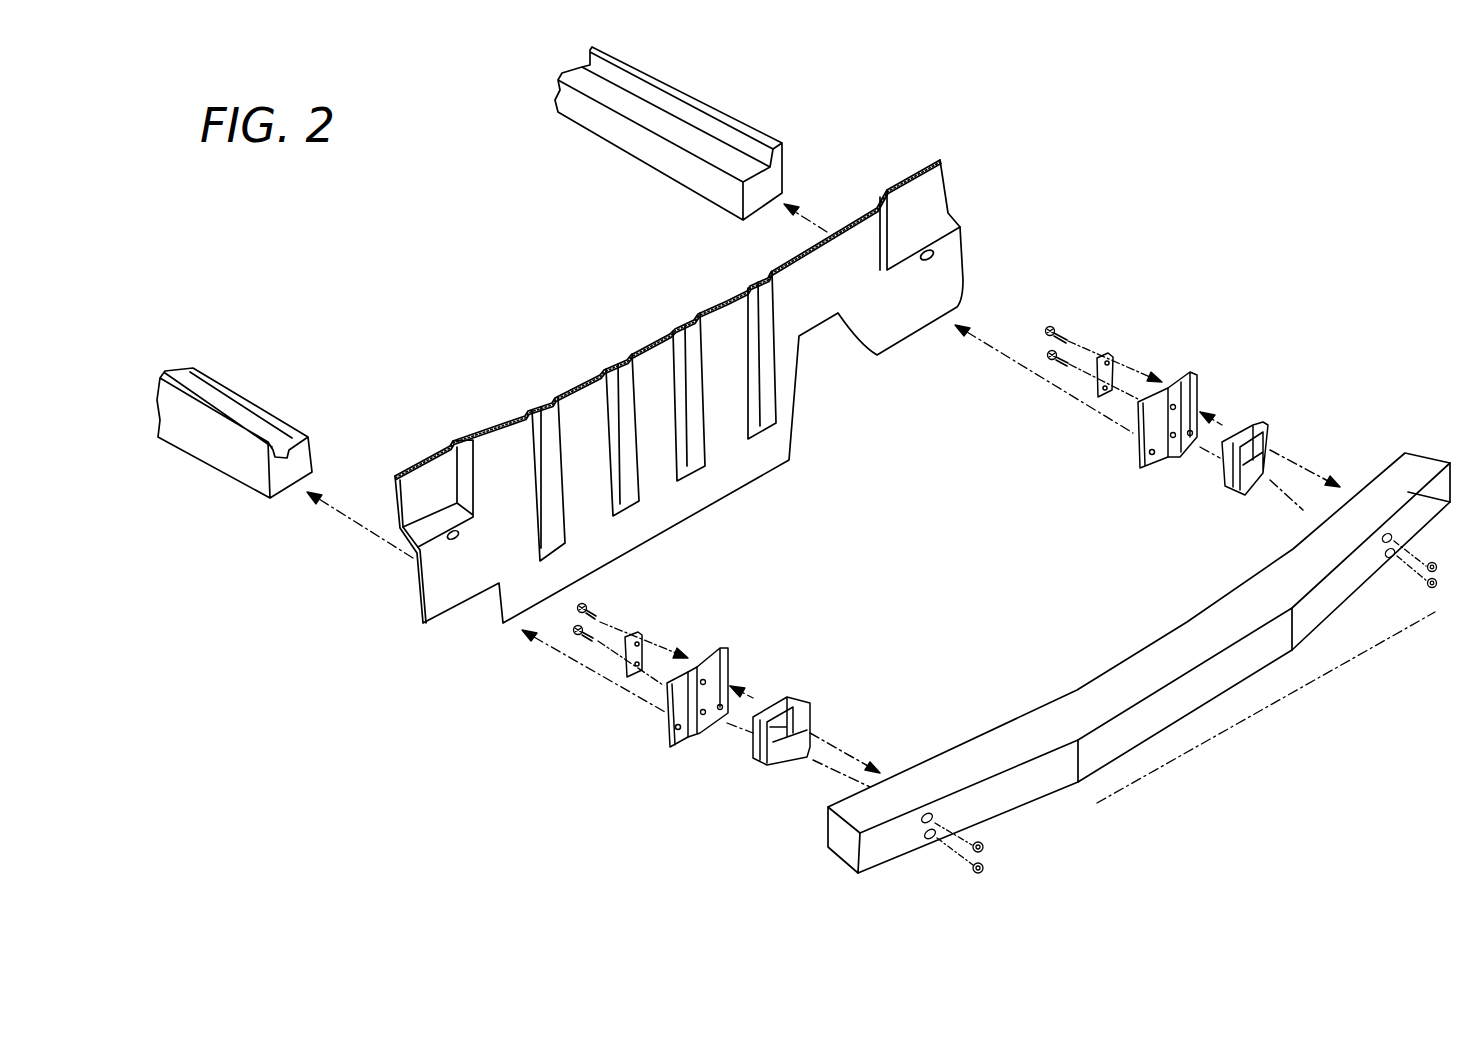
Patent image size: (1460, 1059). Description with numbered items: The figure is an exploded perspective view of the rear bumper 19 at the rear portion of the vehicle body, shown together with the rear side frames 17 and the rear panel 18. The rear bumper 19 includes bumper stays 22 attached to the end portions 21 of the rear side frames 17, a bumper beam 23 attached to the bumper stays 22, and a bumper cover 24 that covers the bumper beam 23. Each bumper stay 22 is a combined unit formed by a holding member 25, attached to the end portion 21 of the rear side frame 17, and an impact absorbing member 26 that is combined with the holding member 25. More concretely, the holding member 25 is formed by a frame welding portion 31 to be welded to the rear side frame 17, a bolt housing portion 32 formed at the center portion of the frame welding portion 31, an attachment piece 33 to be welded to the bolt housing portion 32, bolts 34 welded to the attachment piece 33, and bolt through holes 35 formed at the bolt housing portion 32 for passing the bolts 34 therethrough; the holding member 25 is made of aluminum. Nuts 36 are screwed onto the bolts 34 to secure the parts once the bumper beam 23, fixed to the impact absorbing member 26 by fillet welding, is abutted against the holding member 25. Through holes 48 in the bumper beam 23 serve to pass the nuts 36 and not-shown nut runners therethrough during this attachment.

The rear side frame 17 is at (676, 80).
The rear panel 18 is at (945, 174).
The rear bumper 19 is at (1385, 290).
The end portion 21 is at (783, 174).
The bumper stay 22 is at (1357, 347).
The bumper beam 23 is at (1187, 720).
The bumper cover 24 is at (1177, 760).
The holding member 25 is at (1208, 362).
The impact absorbing member 26 is at (1280, 420).
The frame welding portion 31 is at (1182, 373).
The bolt housing portion 32 is at (1167, 386).
The attachment piece 33 is at (1107, 352).
The bolt 34 is at (1047, 356).
The bolt through hole 35 is at (1177, 406).
The nut 36 is at (984, 868).
The through hole 48 is at (925, 838).